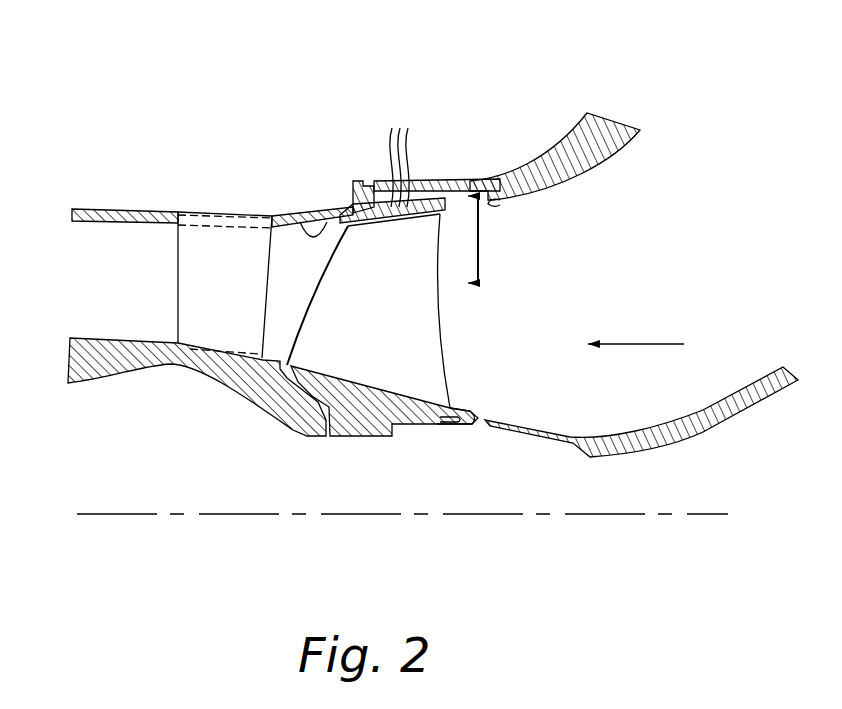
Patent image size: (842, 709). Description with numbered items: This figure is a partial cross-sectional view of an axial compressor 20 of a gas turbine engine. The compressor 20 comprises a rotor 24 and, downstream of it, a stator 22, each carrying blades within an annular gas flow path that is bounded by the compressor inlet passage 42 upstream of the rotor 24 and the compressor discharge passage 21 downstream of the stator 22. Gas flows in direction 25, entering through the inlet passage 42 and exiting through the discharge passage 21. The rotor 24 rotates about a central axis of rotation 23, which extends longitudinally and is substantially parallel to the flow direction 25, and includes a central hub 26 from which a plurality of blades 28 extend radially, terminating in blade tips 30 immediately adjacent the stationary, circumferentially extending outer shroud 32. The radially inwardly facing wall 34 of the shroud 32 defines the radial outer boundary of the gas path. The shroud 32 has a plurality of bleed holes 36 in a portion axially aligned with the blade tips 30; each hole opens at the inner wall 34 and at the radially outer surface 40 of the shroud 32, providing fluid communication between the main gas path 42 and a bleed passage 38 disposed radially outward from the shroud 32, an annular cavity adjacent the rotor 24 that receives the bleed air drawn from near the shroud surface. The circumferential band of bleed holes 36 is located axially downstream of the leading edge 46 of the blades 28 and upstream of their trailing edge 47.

The axial compressor 20 is at (262, 186).
The compressor discharge passage 21 is at (113, 293).
The stator 22 is at (203, 252).
The central axis of rotation 23 is at (230, 514).
The rotor 24 is at (466, 382).
The gas flow direction 25 is at (626, 344).
The central hub 26 is at (363, 413).
The blades 28 is at (420, 329).
The blade tips 30 is at (443, 206).
The outer shroud 32 is at (331, 207).
The radially inwardly facing wall 34 is at (298, 217).
The bleed holes 36 is at (402, 156).
The bleed passage 38 is at (445, 197).
The radially outer surface 40 is at (490, 200).
The compressor inlet passage 42 is at (630, 317).
The leading edge 46 is at (440, 355).
The trailing edge 47 is at (303, 321).